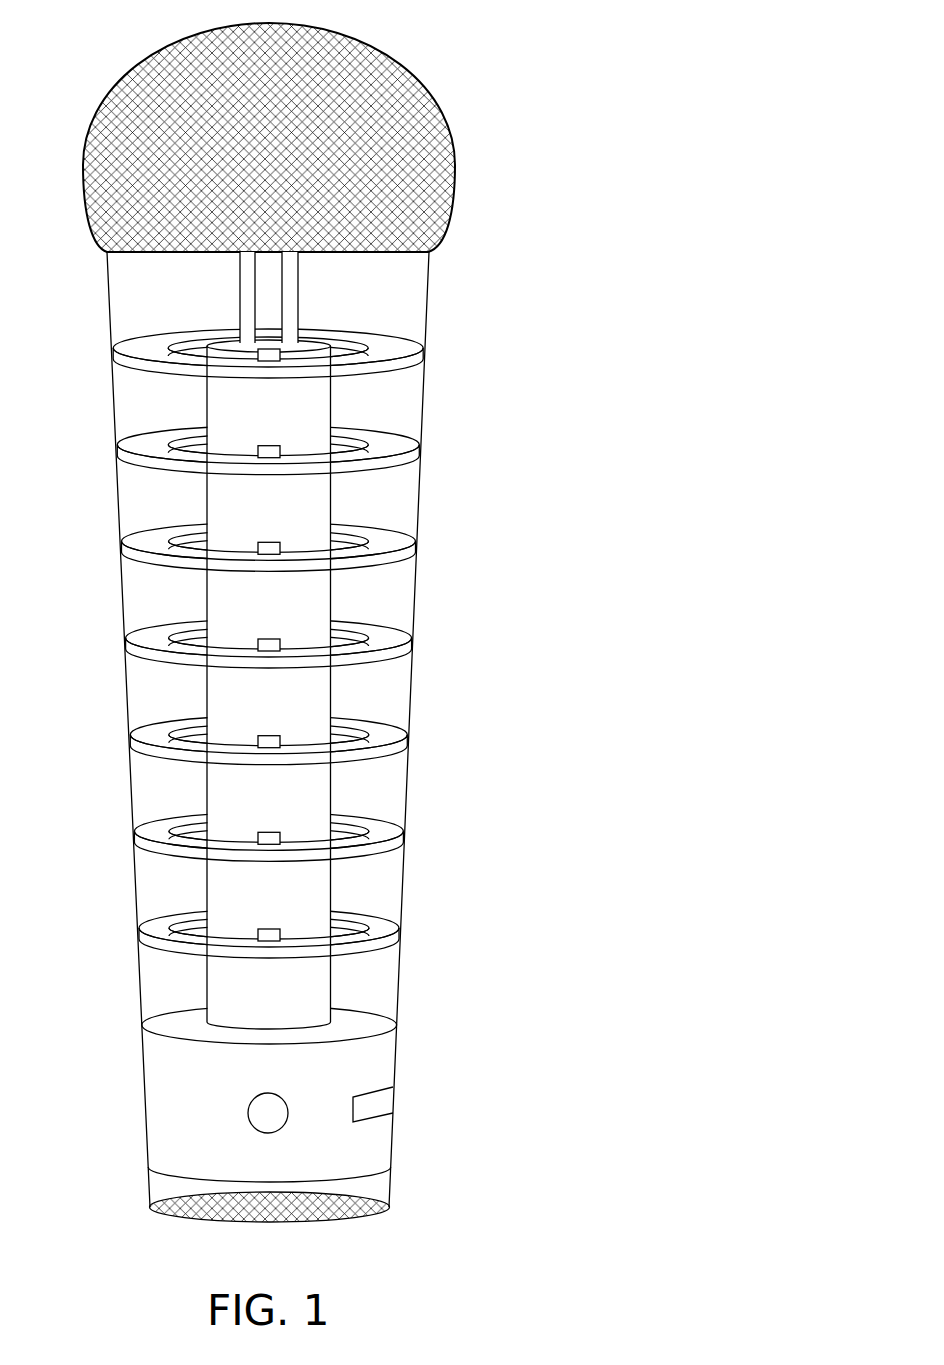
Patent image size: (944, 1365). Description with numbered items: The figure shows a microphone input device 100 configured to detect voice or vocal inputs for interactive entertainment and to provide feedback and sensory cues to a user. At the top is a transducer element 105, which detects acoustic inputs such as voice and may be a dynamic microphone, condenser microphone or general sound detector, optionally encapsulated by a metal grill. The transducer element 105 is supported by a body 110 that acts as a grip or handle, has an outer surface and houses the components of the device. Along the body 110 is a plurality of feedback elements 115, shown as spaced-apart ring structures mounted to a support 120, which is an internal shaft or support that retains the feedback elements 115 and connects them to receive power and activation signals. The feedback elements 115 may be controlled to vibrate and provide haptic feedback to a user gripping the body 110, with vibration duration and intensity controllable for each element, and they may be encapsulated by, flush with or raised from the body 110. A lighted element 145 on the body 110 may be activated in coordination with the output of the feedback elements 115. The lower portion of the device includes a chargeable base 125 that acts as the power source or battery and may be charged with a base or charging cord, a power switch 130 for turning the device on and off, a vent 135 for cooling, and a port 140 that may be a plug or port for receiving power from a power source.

The microphone input device 100 is at (603, 85).
The transducer element 105 is at (419, 81).
The body 110 is at (122, 590).
The feedback elements 115 is at (421, 356).
The support 120 is at (215, 897).
The chargeable base 125 is at (143, 1088).
The power switch 130 is at (238, 1113).
The vent 135 is at (268, 1223).
The port 140 is at (420, 1078).
The lighted element 145 is at (269, 736).